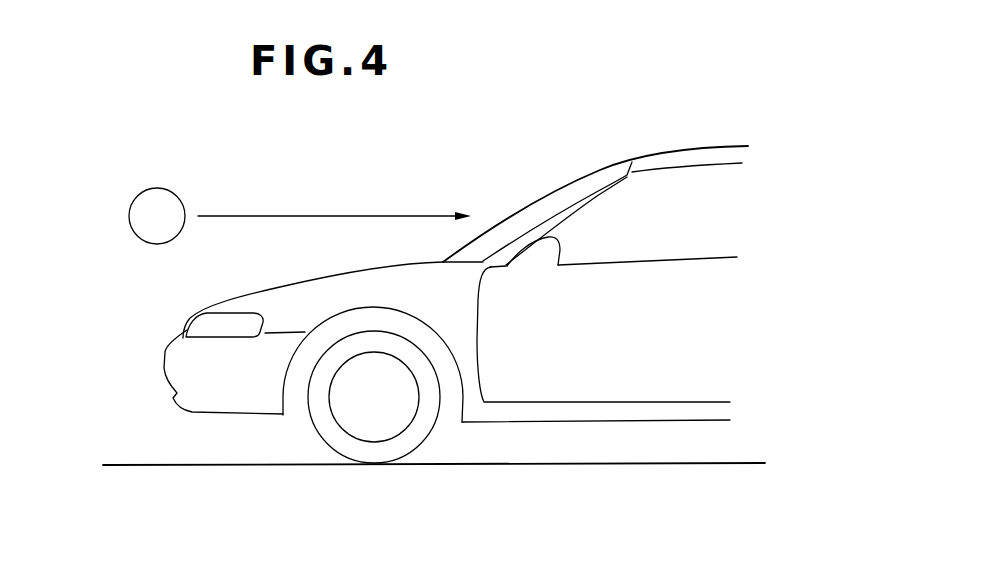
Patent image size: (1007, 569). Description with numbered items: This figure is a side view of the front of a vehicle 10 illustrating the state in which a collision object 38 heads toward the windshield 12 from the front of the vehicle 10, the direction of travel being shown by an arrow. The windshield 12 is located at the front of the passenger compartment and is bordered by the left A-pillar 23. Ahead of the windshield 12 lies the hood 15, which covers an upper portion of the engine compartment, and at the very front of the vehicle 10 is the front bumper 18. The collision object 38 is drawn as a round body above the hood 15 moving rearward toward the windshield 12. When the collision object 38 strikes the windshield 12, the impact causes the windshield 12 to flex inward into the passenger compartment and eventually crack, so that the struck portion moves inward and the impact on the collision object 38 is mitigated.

The vehicle 10 is at (693, 147).
The windshield 12 is at (555, 195).
The left A-pillar 23 is at (593, 194).
The hood 15 is at (227, 296).
The front bumper 18 is at (165, 365).
The collision object 38 is at (156, 189).